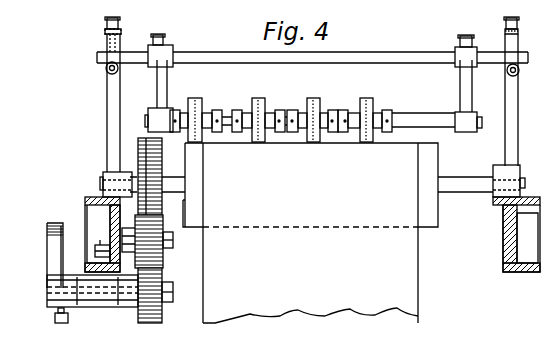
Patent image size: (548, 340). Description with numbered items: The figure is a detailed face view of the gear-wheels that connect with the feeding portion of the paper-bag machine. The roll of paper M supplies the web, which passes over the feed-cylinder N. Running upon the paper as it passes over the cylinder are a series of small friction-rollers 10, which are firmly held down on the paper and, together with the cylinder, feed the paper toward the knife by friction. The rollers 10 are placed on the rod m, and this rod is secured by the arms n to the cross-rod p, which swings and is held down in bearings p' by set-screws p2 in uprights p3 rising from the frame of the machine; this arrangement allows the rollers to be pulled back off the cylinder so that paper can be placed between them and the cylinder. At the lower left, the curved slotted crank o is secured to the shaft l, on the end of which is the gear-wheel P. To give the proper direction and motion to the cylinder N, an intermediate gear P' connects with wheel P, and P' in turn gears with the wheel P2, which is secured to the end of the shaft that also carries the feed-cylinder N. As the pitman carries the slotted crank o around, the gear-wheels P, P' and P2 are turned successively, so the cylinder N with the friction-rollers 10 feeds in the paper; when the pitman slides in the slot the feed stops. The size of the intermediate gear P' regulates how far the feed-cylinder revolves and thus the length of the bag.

The cross-rod p is at (320, 51).
The bearings p' is at (100, 43).
The set-screws p2 is at (119, 25).
The uprights p3 is at (110, 118).
The arms n is at (167, 85).
The rod m is at (414, 118).
The friction-rollers 10 is at (281, 112).
The feed-cylinder N is at (311, 233).
The roll of paper M is at (310, 233).
The gear-wheel P2 is at (157, 163).
The intermediate gear P' is at (158, 241).
The gear-wheel P is at (155, 304).
The slotted crank o is at (47, 256).
The shaft l is at (50, 292).